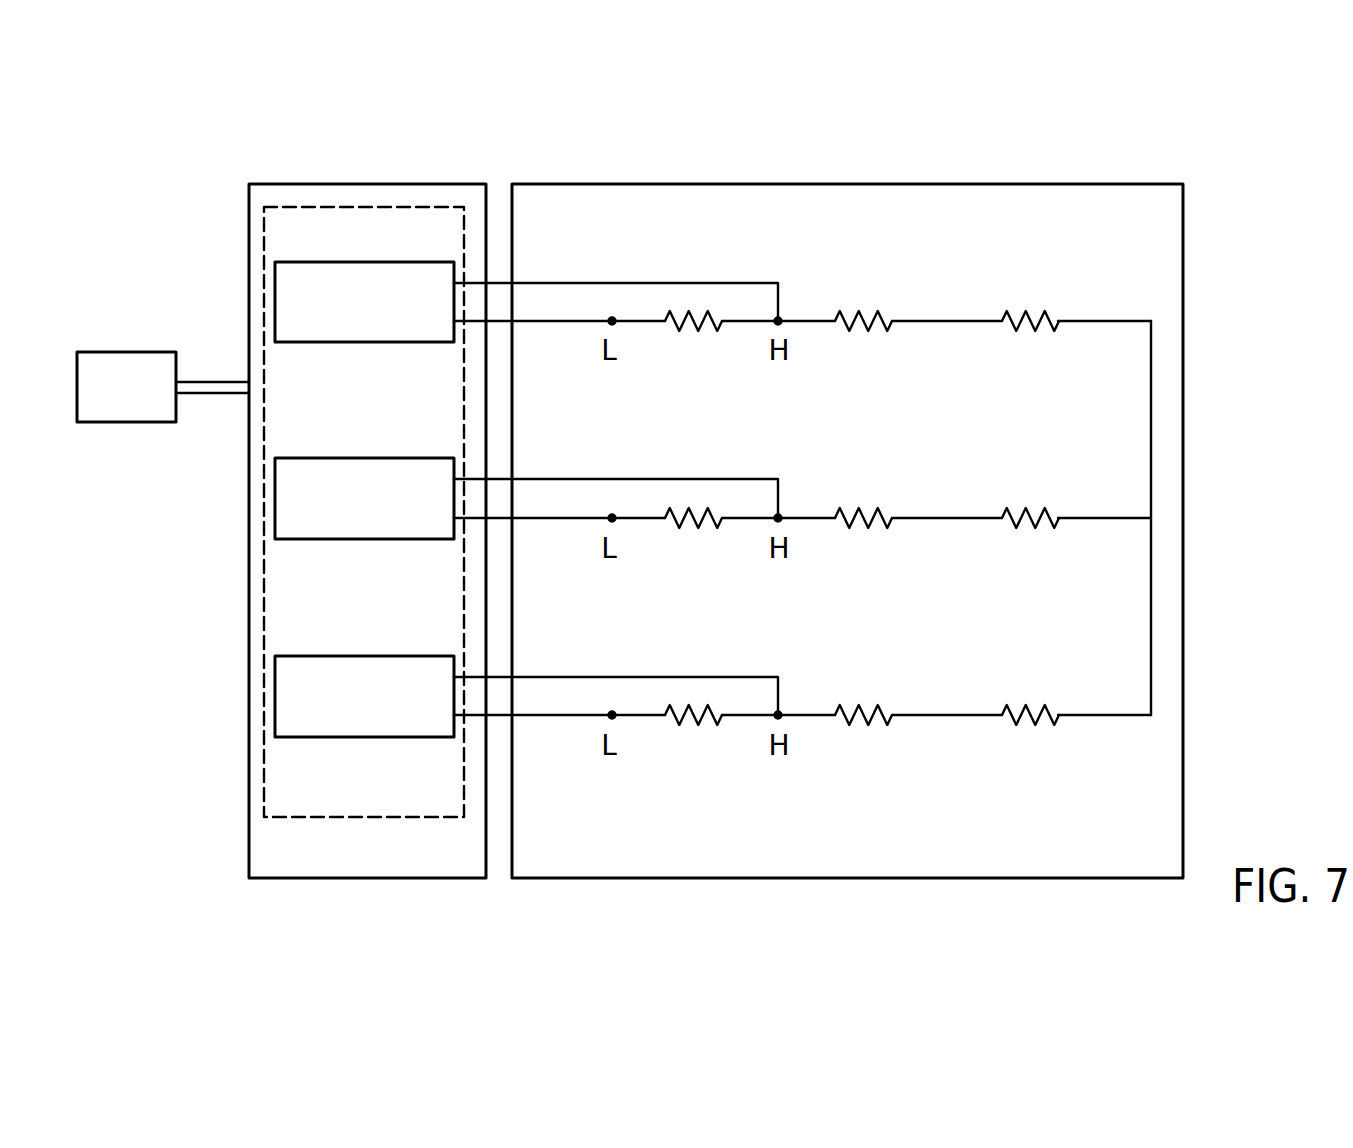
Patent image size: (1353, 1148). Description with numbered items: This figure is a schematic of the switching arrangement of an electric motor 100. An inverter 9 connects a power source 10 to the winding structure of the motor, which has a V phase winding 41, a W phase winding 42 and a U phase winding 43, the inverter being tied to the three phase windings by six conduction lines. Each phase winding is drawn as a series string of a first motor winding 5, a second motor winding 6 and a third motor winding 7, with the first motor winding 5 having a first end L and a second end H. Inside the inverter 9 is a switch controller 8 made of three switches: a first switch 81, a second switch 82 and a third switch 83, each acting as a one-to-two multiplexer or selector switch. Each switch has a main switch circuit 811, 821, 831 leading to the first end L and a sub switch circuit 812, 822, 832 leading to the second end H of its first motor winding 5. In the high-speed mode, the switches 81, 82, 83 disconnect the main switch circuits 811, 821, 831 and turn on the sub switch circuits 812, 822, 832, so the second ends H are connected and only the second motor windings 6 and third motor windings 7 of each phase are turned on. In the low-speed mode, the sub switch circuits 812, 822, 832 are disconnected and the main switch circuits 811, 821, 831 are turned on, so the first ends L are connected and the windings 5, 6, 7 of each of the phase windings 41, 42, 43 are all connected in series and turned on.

The electric motor 100 is at (860, 184).
The power source 10 is at (127, 352).
The inverter 9 is at (344, 184).
The switch controller 8 is at (415, 207).
The first switch 81 is at (365, 342).
The second switch 82 is at (365, 539).
The third switch 83 is at (365, 737).
The main switch circuit 811 is at (552, 322).
The sub switch circuit 812 is at (628, 283).
The main switch circuit 821 is at (552, 519).
The sub switch circuit 822 is at (628, 479).
The main switch circuit 831 is at (552, 716).
The sub switch circuit 832 is at (628, 677).
The V phase winding 41 is at (884, 274).
The W phase winding 42 is at (884, 471).
The U phase winding 43 is at (883, 667).
The first motor winding 5 is at (695, 335).
The second motor winding 6 is at (863, 335).
The third motor winding 7 is at (1032, 335).